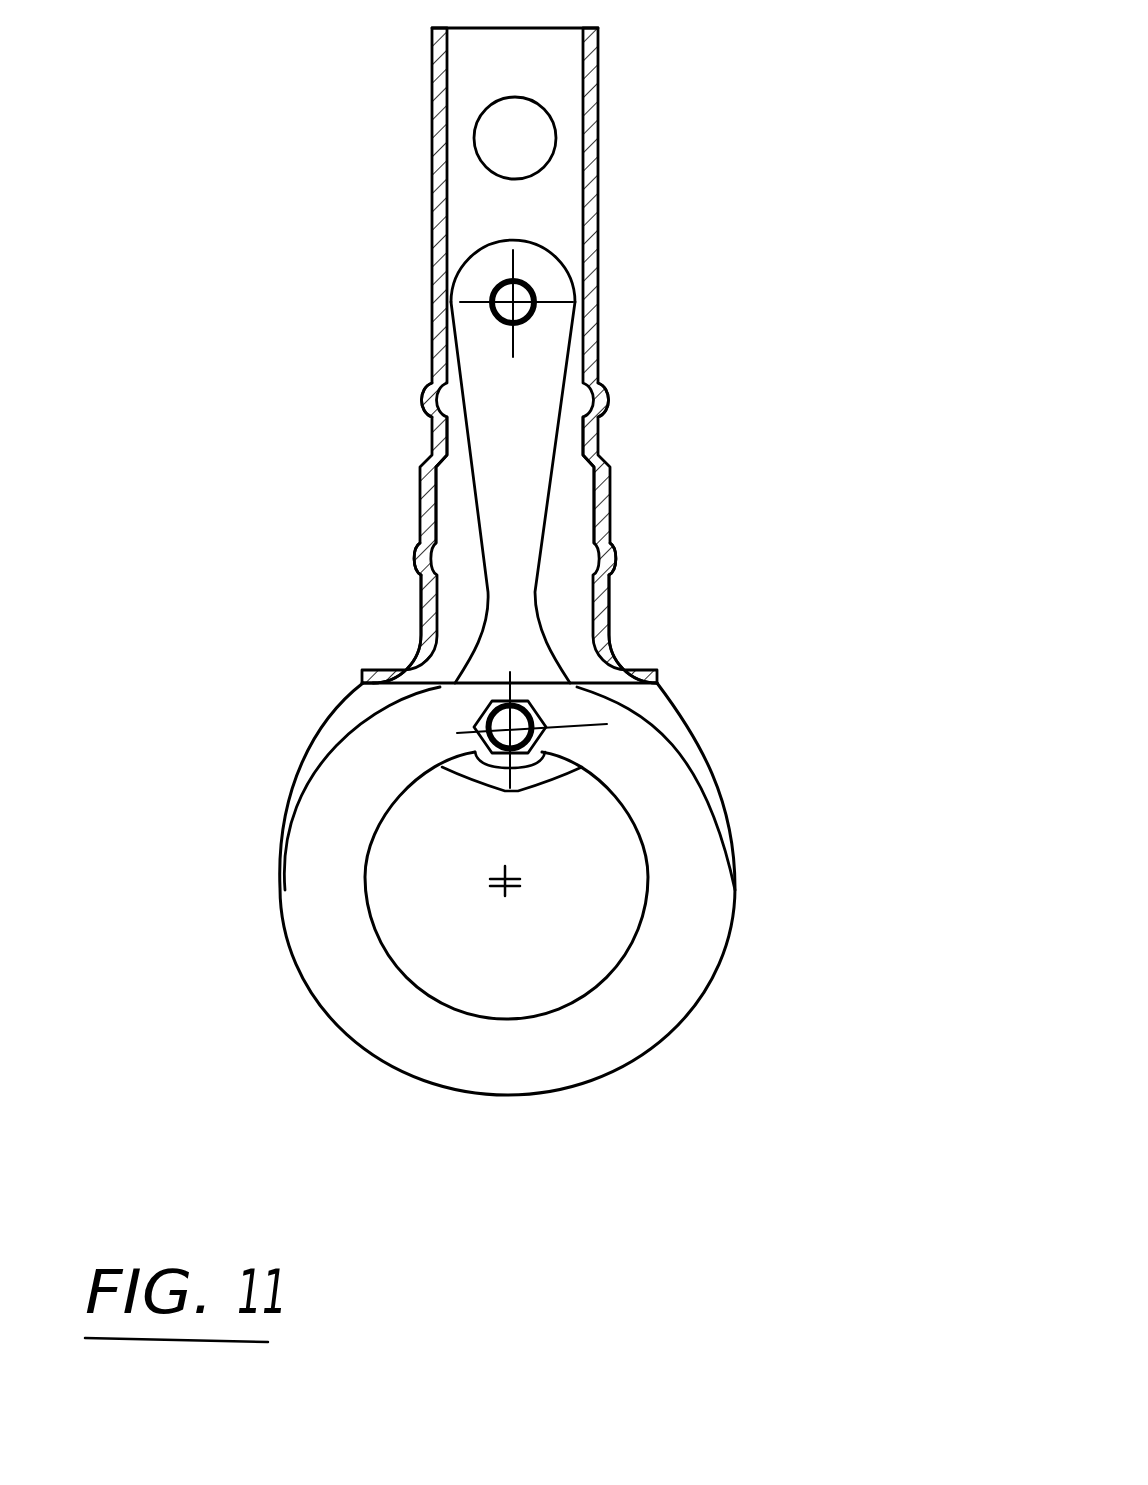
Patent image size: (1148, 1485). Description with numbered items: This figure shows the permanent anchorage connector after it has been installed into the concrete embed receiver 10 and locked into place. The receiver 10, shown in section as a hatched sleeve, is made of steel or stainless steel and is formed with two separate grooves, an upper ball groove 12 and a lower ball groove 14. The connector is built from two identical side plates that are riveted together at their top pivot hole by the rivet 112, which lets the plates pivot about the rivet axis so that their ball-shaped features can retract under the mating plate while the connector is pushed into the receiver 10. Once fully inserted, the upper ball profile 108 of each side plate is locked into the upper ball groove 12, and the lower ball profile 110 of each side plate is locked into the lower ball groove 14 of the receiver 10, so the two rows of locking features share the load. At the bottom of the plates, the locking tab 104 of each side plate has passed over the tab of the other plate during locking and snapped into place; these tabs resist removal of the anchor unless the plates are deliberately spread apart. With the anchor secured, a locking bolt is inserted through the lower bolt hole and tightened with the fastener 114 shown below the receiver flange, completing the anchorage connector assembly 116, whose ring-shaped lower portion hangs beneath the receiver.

The concrete embed receiver 10 is at (598, 163).
The upper ball groove 12 is at (603, 395).
The lower ball groove 14 is at (612, 556).
The locking tab 104 is at (600, 785).
The upper ball profile 108 is at (600, 382).
The lower ball profile 110 is at (607, 543).
The rivet 112 is at (535, 284).
The nut 114 is at (545, 713).
The anchorage connector assembly 116 is at (550, 1093).